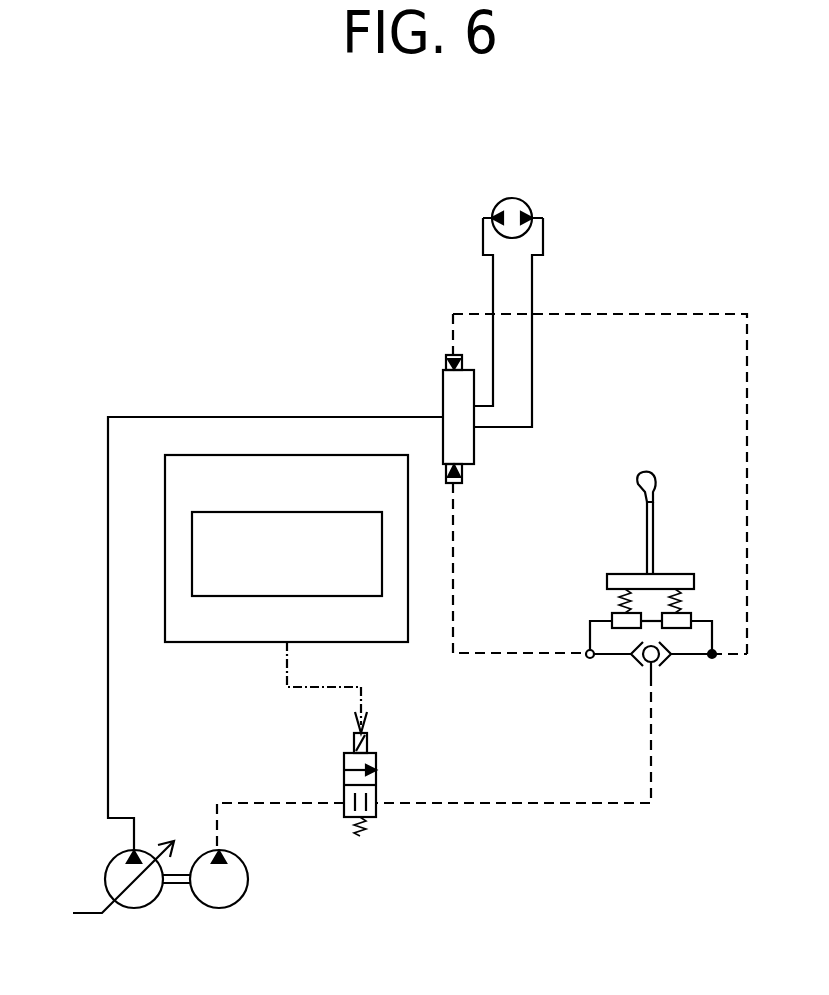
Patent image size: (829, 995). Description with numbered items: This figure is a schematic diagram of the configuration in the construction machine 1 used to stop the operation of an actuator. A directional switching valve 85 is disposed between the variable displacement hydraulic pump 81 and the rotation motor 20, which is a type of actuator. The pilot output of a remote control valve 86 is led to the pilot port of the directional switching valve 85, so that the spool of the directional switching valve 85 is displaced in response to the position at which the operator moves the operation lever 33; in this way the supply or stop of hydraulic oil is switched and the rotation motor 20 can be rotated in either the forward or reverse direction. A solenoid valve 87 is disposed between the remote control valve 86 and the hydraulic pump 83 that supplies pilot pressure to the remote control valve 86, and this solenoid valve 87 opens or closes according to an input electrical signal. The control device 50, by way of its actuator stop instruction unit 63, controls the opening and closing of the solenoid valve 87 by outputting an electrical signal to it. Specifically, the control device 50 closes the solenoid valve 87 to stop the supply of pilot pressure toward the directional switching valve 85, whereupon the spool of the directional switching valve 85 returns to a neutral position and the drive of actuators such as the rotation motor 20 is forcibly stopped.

The construction machine 1 is at (258, 209).
The rotation motor 20 is at (512, 198).
The operation lever 33 is at (651, 472).
The control device 50 is at (286, 597).
The actuator stop instruction unit 63 is at (328, 596).
The variable displacement hydraulic pump 81 is at (139, 908).
The hydraulic pump 83 is at (221, 908).
The directional switching valve 85 is at (474, 468).
The remote control valve 86 is at (599, 606).
The solenoid valve 87 is at (371, 842).